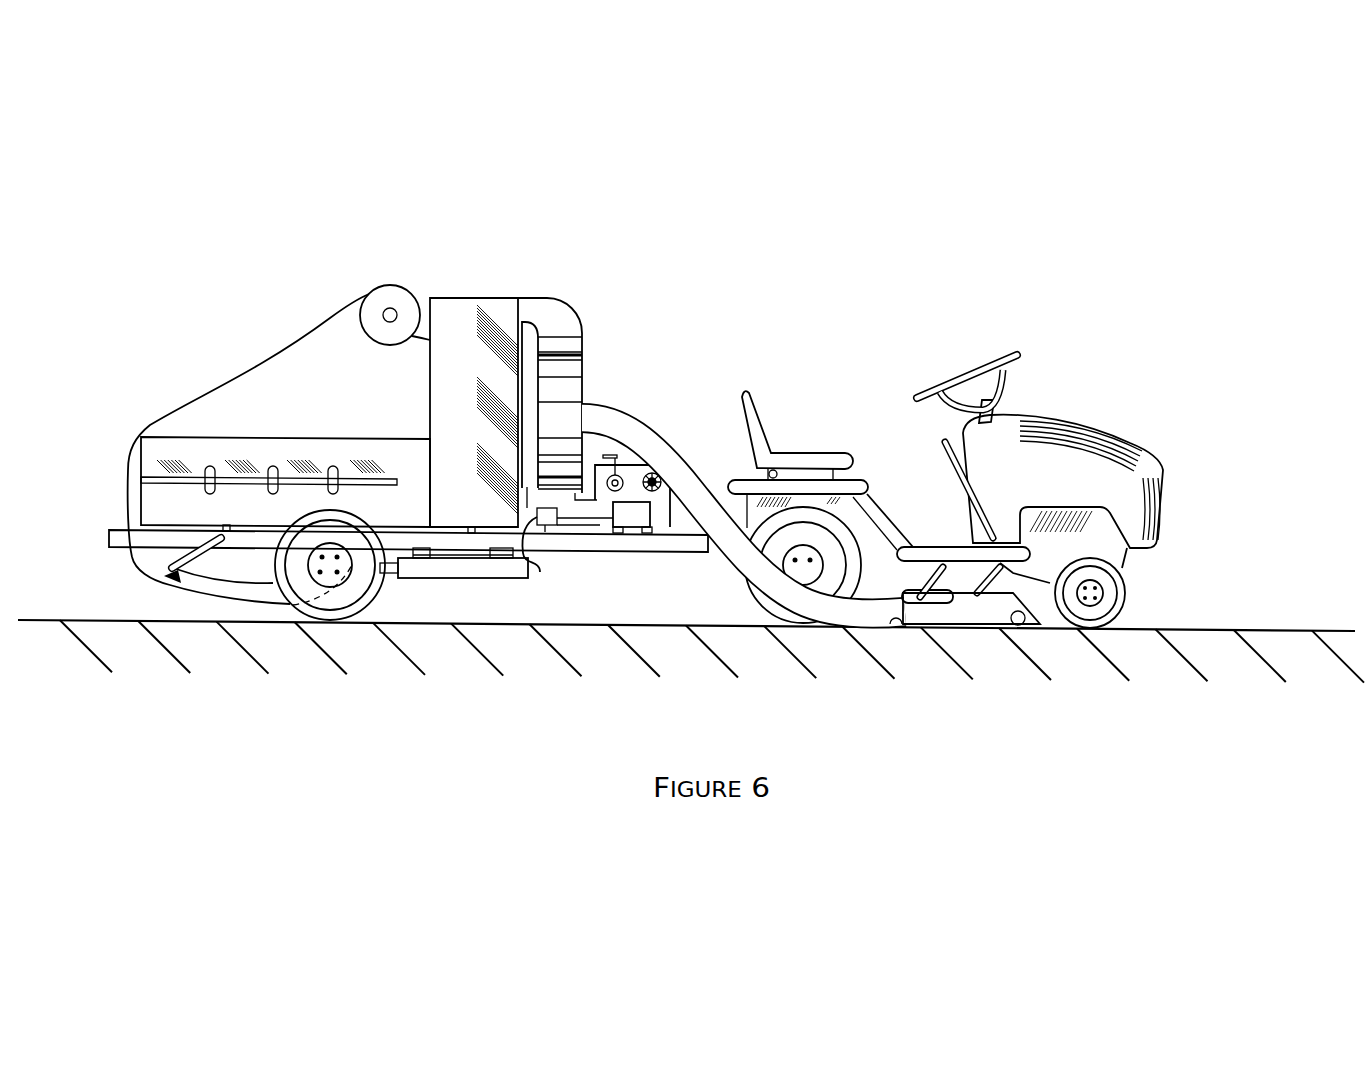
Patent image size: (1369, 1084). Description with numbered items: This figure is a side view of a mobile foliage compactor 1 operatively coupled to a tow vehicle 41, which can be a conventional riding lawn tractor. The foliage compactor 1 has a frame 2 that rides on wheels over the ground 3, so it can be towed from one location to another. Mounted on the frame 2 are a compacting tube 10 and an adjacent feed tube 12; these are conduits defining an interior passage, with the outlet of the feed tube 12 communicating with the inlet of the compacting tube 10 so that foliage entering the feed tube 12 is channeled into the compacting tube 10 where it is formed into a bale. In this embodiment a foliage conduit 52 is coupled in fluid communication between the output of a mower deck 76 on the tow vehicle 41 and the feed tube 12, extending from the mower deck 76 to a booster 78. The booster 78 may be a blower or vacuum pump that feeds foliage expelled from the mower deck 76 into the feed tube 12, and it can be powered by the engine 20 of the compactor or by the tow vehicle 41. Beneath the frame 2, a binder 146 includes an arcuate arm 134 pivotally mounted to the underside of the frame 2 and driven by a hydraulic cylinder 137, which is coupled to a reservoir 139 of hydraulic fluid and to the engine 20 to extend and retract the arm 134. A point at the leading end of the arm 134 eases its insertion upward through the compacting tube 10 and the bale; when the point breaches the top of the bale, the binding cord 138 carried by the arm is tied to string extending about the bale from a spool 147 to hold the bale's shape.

The foliage compactor 1 is at (200, 285).
The frame 2 is at (125, 537).
The ground 3 is at (1290, 630).
The compacting tube 10 is at (205, 450).
The feed tube 12 is at (453, 347).
The engine 20 is at (662, 512).
The tow vehicle 41 is at (881, 543).
The foliage conduit 52 is at (688, 480).
The mower deck 76 is at (975, 610).
The booster 78 is at (565, 393).
The arcuate arm 134 is at (245, 587).
The hydraulic cylinder 137 is at (468, 568).
The binding cord 138 is at (242, 380).
The reservoir 139 is at (627, 513).
The binder 146 is at (168, 580).
The spool 147 is at (383, 305).